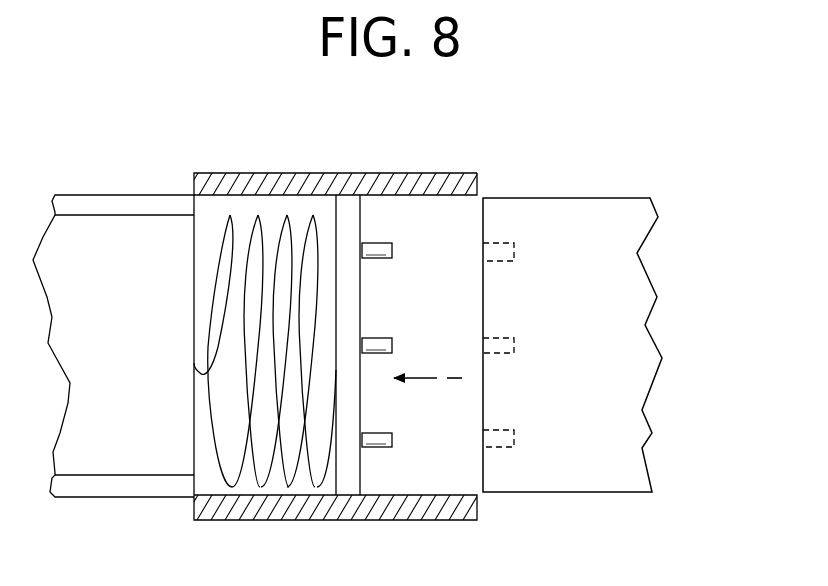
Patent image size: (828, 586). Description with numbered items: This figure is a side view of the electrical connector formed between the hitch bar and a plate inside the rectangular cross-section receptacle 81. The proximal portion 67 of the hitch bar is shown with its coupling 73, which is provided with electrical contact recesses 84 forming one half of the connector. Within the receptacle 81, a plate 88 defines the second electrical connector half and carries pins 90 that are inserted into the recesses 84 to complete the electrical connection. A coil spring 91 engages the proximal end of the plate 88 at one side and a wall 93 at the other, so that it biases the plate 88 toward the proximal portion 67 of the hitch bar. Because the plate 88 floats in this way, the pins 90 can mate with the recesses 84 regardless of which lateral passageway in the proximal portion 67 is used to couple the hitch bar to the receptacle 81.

The proximal portion 67 is at (599, 194).
The coupling 73 is at (456, 252).
The rectangular cross-section receptacle 81 is at (218, 181).
The electrical contact recesses 84 is at (493, 253).
The plate 88 is at (347, 207).
The pins 90 is at (372, 253).
The coil spring 91 is at (232, 216).
The wall 93 is at (194, 286).